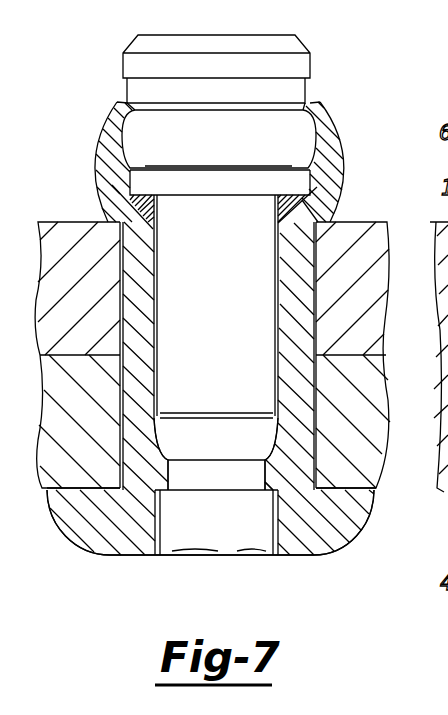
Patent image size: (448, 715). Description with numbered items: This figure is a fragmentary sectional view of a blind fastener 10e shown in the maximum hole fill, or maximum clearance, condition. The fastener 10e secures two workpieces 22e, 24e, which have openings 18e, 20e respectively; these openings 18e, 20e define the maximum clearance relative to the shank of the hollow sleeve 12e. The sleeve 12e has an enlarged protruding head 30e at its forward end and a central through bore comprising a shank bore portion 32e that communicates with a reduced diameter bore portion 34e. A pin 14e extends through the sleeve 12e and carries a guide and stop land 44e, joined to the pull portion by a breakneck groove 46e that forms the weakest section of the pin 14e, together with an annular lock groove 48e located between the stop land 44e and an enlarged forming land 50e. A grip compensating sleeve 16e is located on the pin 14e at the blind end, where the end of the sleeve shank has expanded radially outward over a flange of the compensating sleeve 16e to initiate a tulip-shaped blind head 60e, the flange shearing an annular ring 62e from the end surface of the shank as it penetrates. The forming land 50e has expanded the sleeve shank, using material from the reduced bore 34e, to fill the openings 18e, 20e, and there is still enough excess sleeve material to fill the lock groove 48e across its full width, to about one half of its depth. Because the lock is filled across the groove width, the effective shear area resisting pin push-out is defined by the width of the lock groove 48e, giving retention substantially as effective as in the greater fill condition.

The blind fastener 10e is at (120, 70).
The hollow sleeve 12e is at (125, 256).
The pin 14e is at (257, 268).
The grip compensating sleeve 16e is at (282, 133).
The opening 18e is at (124, 394).
The opening 20e is at (119, 268).
The workpiece 22e is at (47, 490).
The workpiece 24e is at (37, 232).
The enlarged head 30e is at (327, 545).
The shank bore portion 32e is at (157, 261).
The reduced diameter bore portion 34e is at (162, 436).
The guide and stop land 44e is at (248, 536).
The breakneck groove 46e is at (212, 557).
The lock groove 48e is at (258, 482).
The forming land 50e is at (242, 451).
The tulip-shaped blind head 60e is at (104, 128).
The annular ring 62e is at (149, 200).